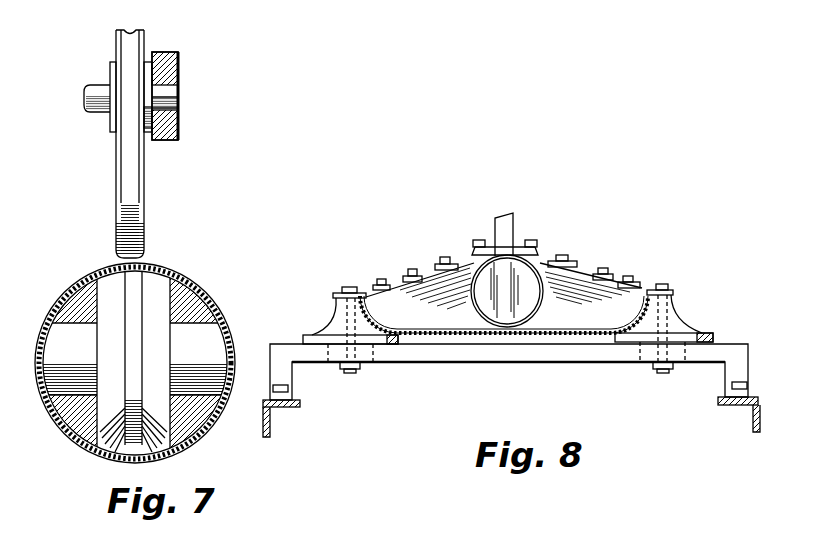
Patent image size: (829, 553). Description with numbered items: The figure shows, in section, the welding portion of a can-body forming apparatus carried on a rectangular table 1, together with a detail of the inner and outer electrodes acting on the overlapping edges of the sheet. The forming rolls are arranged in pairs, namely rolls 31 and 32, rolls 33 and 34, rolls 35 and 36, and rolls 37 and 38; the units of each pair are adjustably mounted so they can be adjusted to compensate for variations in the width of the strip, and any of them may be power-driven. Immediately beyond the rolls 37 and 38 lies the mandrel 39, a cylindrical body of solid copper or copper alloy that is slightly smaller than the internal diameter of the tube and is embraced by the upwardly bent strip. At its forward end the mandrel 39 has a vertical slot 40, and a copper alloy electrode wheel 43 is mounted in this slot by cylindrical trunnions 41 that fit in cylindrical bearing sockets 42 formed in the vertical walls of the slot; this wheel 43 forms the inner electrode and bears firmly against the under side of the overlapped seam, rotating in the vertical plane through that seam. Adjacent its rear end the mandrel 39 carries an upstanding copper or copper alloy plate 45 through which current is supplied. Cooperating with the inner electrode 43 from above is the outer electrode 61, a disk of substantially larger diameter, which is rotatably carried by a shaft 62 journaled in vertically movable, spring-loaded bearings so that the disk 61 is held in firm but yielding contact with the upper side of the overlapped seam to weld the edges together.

In FIG. 8, the table 1 is at (270, 417).
In FIG. 8, the forming roll 31 is at (677, 322).
In FIG. 8, the forming roll 32 is at (333, 318).
In FIG. 8, the forming roll 33 is at (637, 281).
In FIG. 8, the forming roll 34 is at (378, 280).
In FIG. 8, the forming roll 35 is at (604, 272).
In FIG. 8, the forming roll 36 is at (412, 273).
In FIG. 8, the forming roll 37 is at (572, 262).
In FIG. 8, the forming roll 38 is at (441, 264).
In FIG. 7, the mandrel 39 is at (55, 413).
In FIG. 8, the mandrel 39 is at (522, 295).
In FIG. 7, the vertical slot 40 is at (107, 443).
In FIG. 7, the cylindrical trunnions 41 is at (72, 342).
In FIG. 7, the cylindrical bearing sockets 42 is at (62, 318).
In FIG. 7, the electrode wheel 43 is at (152, 293).
In FIG. 8, the upstanding plate 45 is at (507, 237).
In FIG. 7, the outer electrode 61 is at (130, 160).
In FIG. 7, the shaft 62 is at (100, 90).